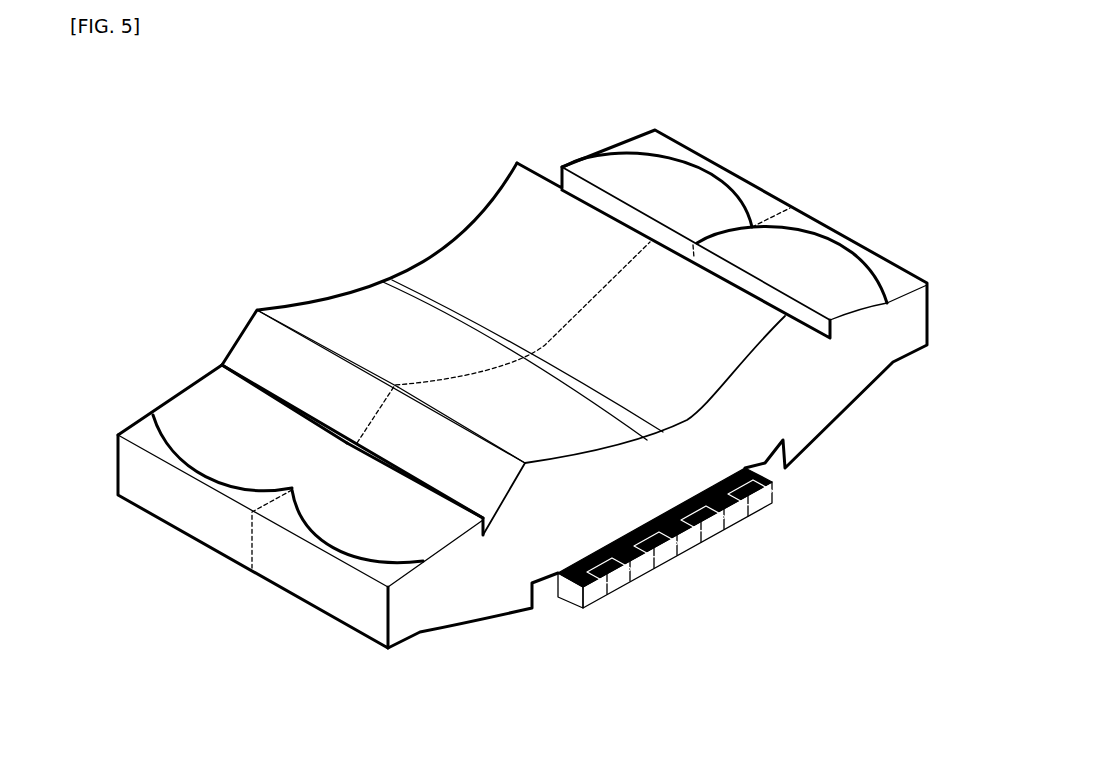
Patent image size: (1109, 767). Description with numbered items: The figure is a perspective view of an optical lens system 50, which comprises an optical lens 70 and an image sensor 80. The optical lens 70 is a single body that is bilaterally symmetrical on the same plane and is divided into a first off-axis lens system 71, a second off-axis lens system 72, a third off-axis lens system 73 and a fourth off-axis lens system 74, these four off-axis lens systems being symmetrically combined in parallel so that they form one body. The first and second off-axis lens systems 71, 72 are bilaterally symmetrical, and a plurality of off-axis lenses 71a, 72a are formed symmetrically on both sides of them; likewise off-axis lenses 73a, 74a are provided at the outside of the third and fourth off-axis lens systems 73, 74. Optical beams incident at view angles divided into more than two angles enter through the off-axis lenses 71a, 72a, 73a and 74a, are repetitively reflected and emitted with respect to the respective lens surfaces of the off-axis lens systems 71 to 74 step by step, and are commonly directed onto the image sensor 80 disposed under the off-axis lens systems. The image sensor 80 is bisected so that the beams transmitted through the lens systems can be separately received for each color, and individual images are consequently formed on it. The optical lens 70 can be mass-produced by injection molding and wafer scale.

The optical lens system 50 is at (843, 134).
The optical lens 70 is at (354, 279).
The first off-axis lens system 71 is at (473, 217).
The off-axis lens 71a is at (692, 183).
The second off-axis lens system 72 is at (253, 342).
The off-axis lens 72a is at (212, 452).
The third off-axis lens system 73 is at (733, 343).
The off-axis lens 73a is at (823, 253).
The fourth off-axis lens system 74 is at (460, 473).
The off-axis lens 74a is at (348, 530).
The image sensor 80 is at (648, 538).